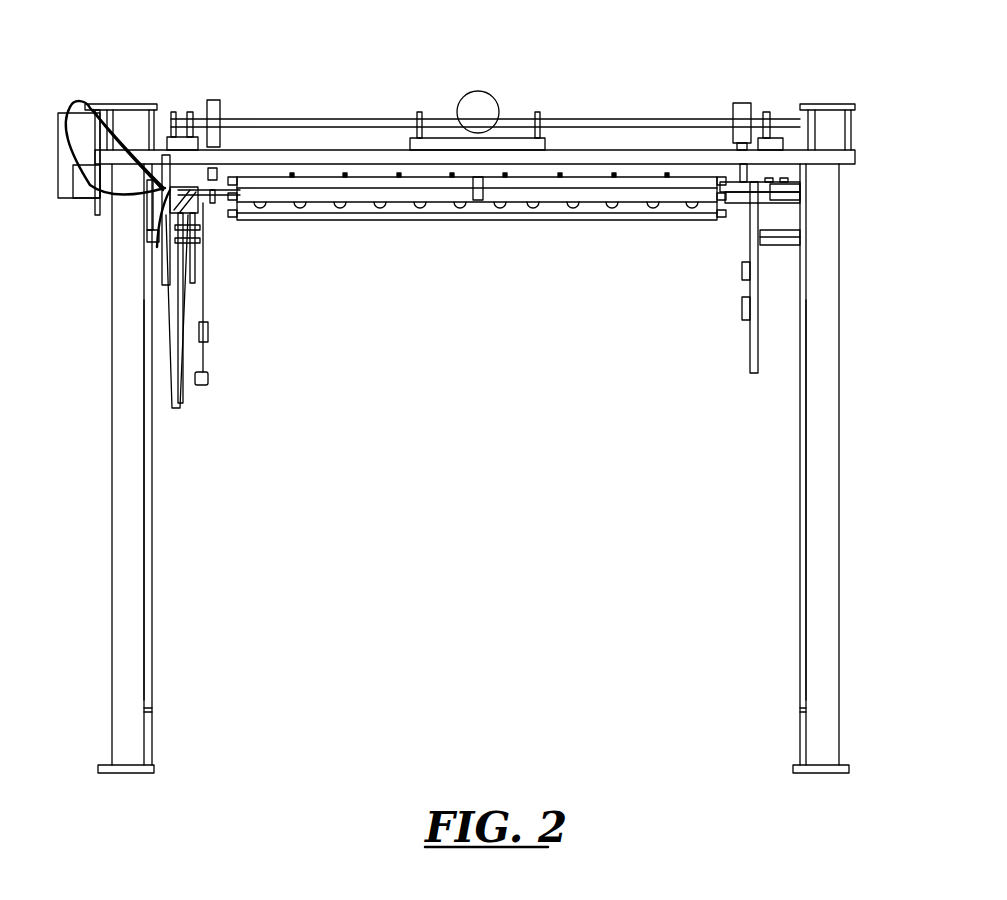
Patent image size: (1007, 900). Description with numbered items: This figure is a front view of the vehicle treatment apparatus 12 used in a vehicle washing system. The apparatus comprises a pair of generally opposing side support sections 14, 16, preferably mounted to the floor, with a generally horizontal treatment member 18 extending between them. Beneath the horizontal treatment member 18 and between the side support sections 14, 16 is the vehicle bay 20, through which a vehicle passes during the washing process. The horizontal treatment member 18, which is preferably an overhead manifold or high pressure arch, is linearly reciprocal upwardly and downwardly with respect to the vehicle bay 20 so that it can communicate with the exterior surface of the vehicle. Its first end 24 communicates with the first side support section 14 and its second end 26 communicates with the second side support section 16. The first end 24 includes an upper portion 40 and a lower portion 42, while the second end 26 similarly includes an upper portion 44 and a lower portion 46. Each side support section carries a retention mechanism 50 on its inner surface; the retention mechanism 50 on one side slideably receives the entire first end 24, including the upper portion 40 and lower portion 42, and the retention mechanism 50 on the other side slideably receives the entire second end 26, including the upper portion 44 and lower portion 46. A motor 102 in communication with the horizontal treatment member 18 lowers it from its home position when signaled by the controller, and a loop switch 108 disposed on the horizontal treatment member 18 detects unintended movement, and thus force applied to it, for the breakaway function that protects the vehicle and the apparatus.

The vehicle treatment apparatus 12 is at (621, 100).
The side support section 14 is at (120, 565).
The side support section 16 is at (830, 552).
The horizontal treatment member 18 is at (357, 196).
The vehicle bay 20 is at (475, 522).
The first end 24 is at (206, 166).
The second end 26 is at (792, 165).
The upper portion 40 is at (176, 195).
The lower portion 42 is at (157, 247).
The upper portion 44 is at (792, 190).
The lower portion 46 is at (792, 244).
The retention mechanism 50 is at (156, 527).
The motor 102 is at (487, 104).
The loop switch 108 is at (478, 204).